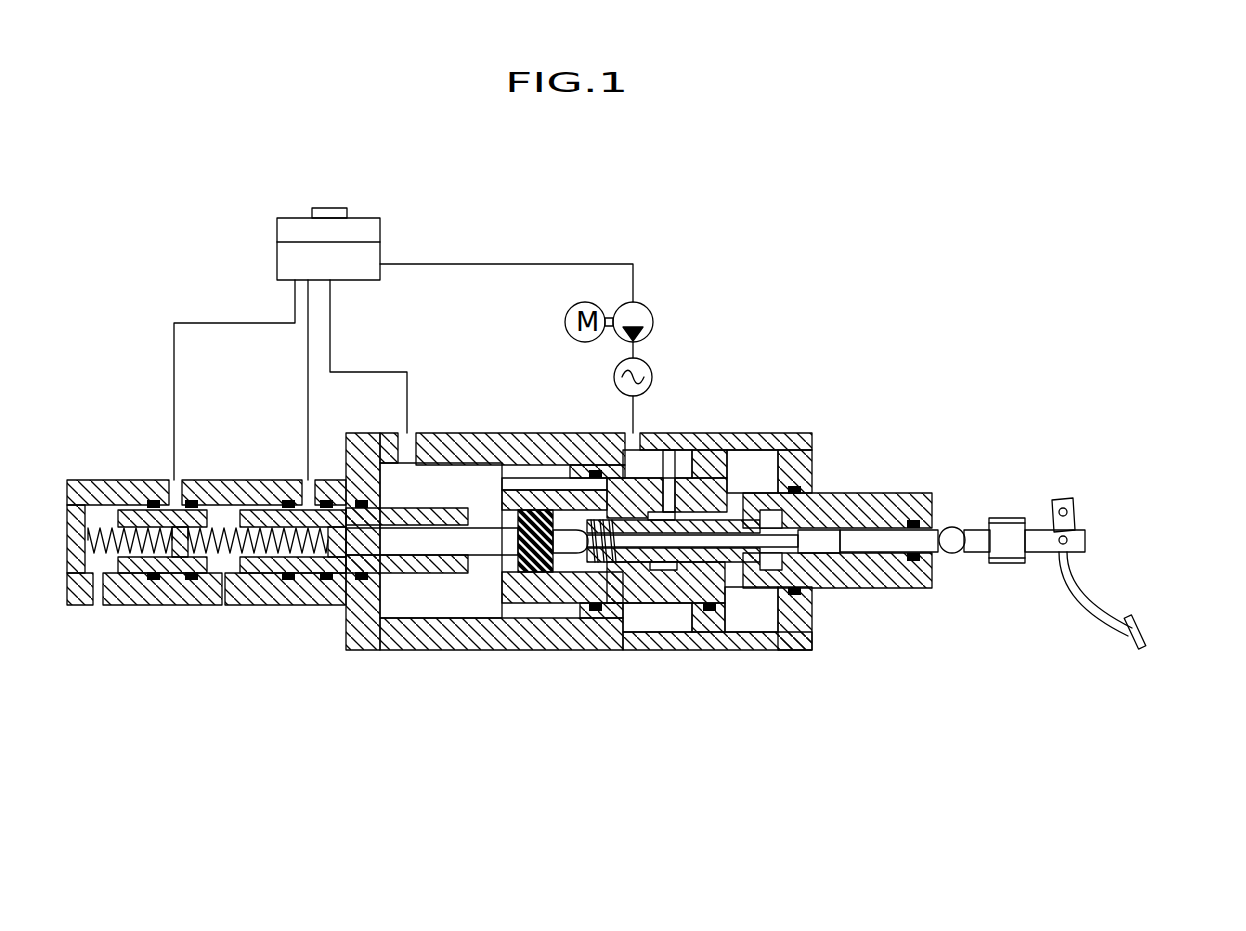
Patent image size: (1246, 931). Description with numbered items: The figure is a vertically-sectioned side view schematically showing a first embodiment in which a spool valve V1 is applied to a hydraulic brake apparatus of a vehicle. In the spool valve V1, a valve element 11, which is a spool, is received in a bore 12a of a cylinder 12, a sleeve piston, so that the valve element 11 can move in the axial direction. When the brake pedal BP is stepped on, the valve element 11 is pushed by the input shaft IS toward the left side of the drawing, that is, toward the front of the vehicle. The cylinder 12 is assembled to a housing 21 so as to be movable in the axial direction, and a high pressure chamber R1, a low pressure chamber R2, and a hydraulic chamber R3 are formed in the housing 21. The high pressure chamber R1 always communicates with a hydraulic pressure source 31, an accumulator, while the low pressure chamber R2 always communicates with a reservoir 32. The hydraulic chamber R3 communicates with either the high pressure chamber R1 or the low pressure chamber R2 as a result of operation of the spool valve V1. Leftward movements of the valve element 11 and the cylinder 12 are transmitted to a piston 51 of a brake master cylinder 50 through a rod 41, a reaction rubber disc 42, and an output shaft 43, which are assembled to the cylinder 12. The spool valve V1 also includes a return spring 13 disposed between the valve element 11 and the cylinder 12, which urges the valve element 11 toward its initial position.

The reservoir 32 is at (373, 252).
The hydraulic pressure source 31 is at (653, 377).
The housing 21 is at (507, 442).
The high pressure chamber R1 is at (667, 460).
The low pressure chamber R2 is at (450, 478).
The hydraulic chamber R3 is at (768, 462).
The bore 12a is at (712, 510).
The spool valve V1 is at (743, 592).
The brake master cylinder 50 is at (303, 607).
The piston 51 is at (408, 565).
The output shaft 43 is at (483, 548).
The reaction rubber disc 42 is at (530, 572).
The rod 41 is at (563, 552).
The return spring 13 is at (600, 555).
The valve element 11 is at (655, 580).
The cylinder 12 is at (677, 600).
The input shaft IS is at (825, 547).
The brake pedal BP is at (1145, 630).